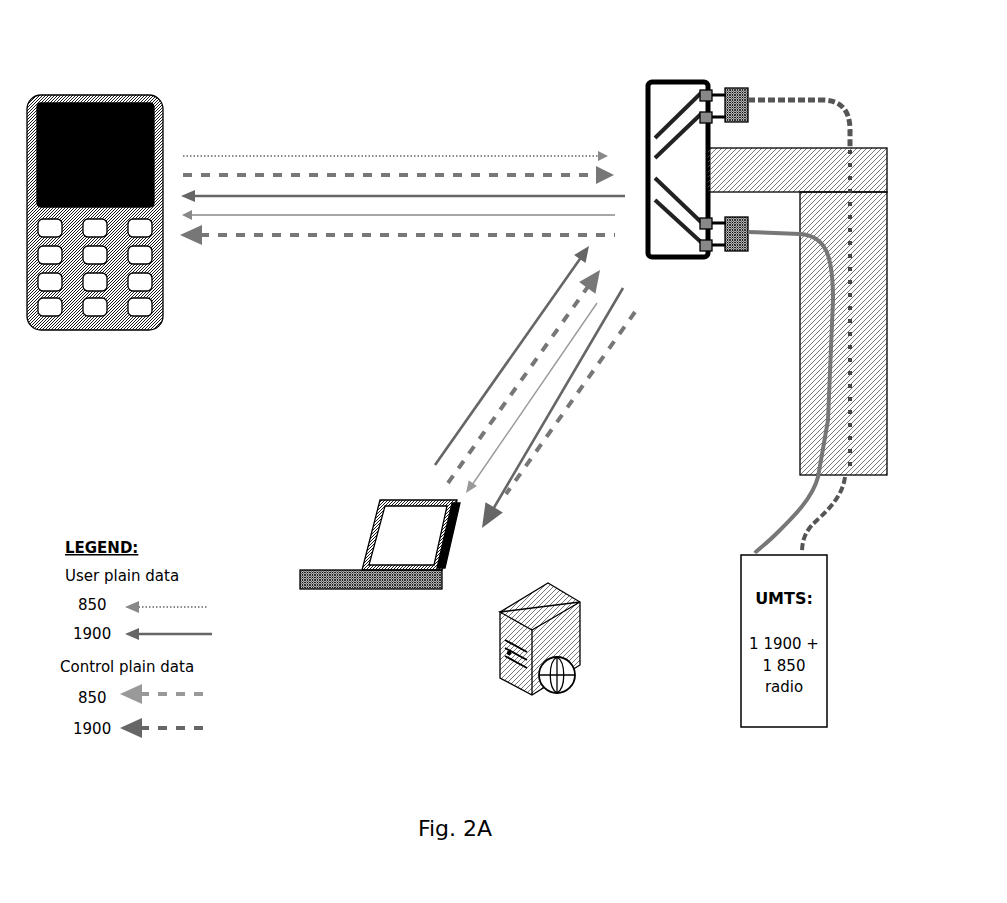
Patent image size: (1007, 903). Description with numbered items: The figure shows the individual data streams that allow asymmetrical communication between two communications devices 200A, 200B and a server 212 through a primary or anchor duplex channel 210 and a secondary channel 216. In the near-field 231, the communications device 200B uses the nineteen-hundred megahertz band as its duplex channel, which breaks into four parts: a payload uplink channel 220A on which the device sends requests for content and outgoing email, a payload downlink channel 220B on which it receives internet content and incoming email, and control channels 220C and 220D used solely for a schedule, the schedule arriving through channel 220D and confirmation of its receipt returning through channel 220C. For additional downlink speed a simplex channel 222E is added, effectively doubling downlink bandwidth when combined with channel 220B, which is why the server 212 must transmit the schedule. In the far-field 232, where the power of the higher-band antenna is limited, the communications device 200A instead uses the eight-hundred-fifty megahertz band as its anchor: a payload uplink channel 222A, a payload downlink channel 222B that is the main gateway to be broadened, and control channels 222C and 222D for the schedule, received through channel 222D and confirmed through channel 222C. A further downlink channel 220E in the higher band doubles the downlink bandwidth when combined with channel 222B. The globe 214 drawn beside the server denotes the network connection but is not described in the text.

The communications device 200A is at (128, 95).
The communications device 200B is at (370, 530).
The primary/anchor channel 210 is at (767, 285).
The server 212 is at (581, 642).
The network globe 214 is at (552, 695).
The secondary channel 216 is at (682, 80).
The payload uplink channel 220A is at (455, 428).
The payload downlink channel 220B is at (582, 353).
The control plane uplink channel 220C is at (513, 388).
The control plane downlink channel 220D is at (625, 333).
The downlink channel 220E is at (273, 194).
The payload uplink channel 222A is at (599, 99).
The payload downlink channel 222B is at (512, 216).
The control plane uplink channel 222C is at (397, 175).
The control plane downlink channel 222D is at (358, 234).
The simplex downlink channel 222E is at (552, 370).
The near-field 231 is at (433, 463).
The far-field 232 is at (252, 157).